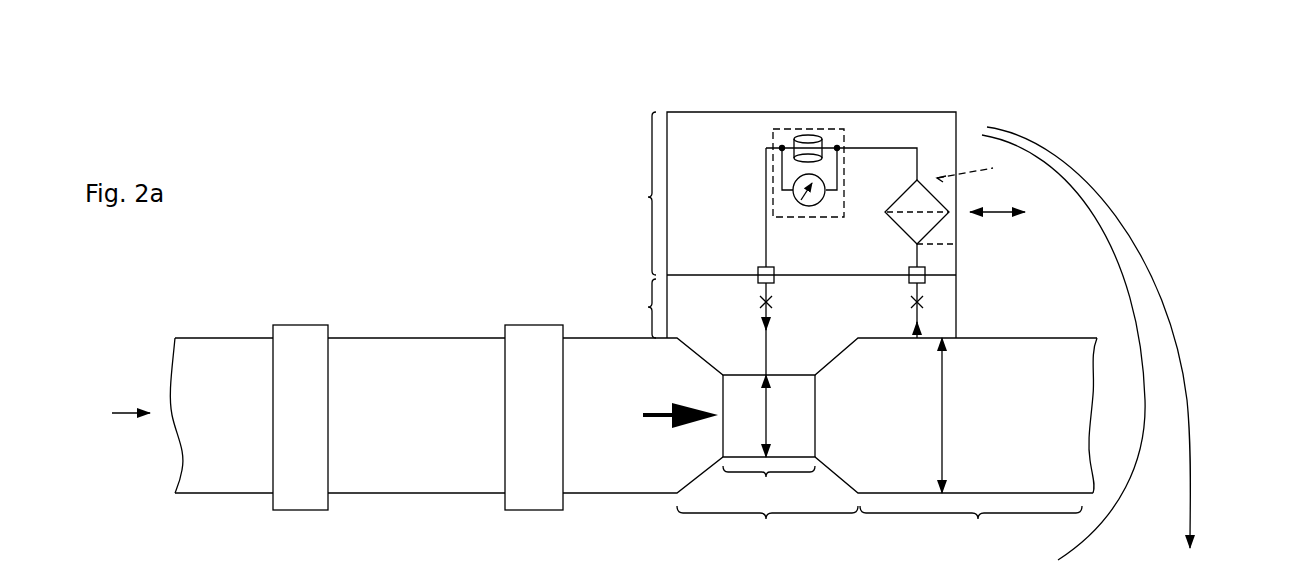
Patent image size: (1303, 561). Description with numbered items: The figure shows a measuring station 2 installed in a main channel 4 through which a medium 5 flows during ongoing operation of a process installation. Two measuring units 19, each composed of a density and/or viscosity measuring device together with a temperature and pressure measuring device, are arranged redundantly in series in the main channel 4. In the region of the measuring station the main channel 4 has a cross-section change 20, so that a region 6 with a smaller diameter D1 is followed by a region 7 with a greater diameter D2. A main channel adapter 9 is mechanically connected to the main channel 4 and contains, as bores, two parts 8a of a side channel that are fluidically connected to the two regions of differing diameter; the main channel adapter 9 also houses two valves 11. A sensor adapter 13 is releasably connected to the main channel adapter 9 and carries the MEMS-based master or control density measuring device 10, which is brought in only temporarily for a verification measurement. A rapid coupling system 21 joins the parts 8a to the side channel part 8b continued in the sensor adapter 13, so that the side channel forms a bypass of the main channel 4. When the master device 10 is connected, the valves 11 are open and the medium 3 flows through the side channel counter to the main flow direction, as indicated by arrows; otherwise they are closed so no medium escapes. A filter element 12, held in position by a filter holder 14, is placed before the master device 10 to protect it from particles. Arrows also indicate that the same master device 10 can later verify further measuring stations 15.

The measuring station 2 is at (658, 96).
The medium 3 is at (1076, 122).
The main channel 4 is at (416, 340).
The medium 5 is at (130, 412).
The region with smaller diameter 6 is at (769, 488).
The region with greater diameter 7 is at (971, 528).
The part of side channel 8a is at (770, 285).
The part of side channel 8b is at (766, 208).
The main channel adapter 9 is at (640, 308).
The MEMS-based master or control density measuring device 10 is at (835, 127).
The valve 11 is at (742, 304).
The filter element 12 is at (895, 233).
The sensor adapter 13 is at (633, 193).
The filter holder 14 is at (982, 166).
The measuring station 15 is at (946, 554).
The measuring unit 19 is at (307, 340).
The cross-section change 20 is at (767, 528).
The rapid coupling system 21 is at (758, 268).
The smaller diameter D1 is at (788, 416).
The greater diameter D2 is at (964, 415).